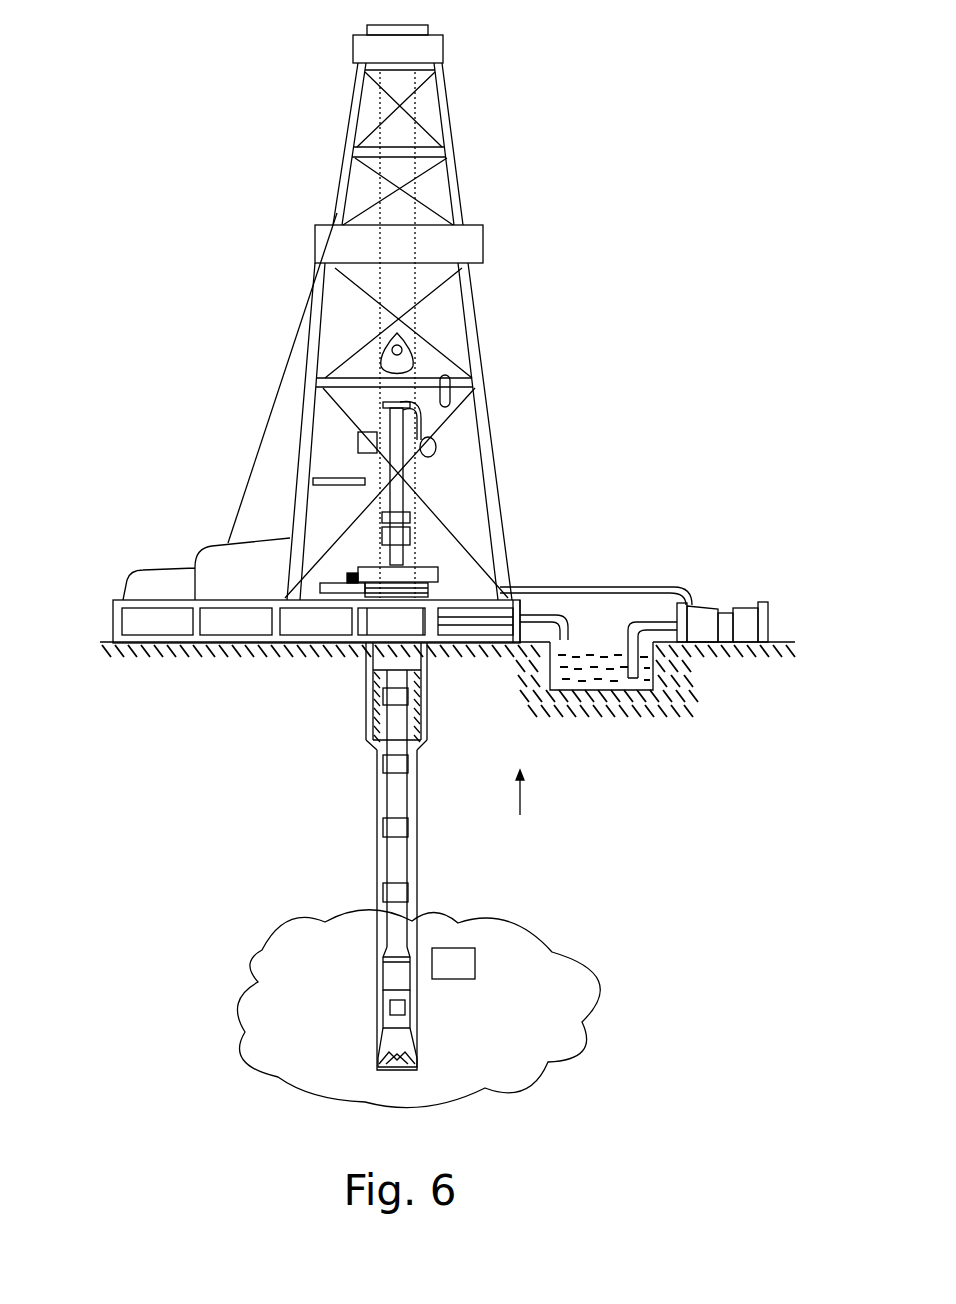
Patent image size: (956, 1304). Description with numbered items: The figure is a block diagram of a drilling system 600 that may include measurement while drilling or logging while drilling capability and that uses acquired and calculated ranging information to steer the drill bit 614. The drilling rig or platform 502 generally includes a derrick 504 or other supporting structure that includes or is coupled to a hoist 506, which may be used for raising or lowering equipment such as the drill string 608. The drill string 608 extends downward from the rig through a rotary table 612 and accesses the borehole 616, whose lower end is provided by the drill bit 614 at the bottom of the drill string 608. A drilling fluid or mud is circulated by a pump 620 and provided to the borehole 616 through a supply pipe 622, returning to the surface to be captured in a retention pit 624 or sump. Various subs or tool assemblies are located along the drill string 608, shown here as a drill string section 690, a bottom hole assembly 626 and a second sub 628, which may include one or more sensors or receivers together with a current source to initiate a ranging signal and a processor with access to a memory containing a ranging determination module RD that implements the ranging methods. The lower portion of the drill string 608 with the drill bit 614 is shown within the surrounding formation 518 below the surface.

The drilling system 600 is at (218, 164).
The derrick 504 is at (458, 185).
The hoist 506 is at (420, 350).
The rotary table 612 is at (420, 563).
The drilling rig or platform 502 is at (113, 620).
The supply pipe 622 is at (633, 587).
The pump 620 is at (710, 603).
The retention pit 624 is at (593, 670).
The borehole 616 is at (417, 812).
The drill string 608 is at (407, 778).
The drill pipe section 690 is at (408, 913).
The second sub 628 is at (382, 965).
The bottom hole assembly 626 is at (382, 1012).
The ranging determination module RD is at (408, 1007).
The drill bit 614 is at (413, 1053).
The subterranean formation 518 is at (565, 985).